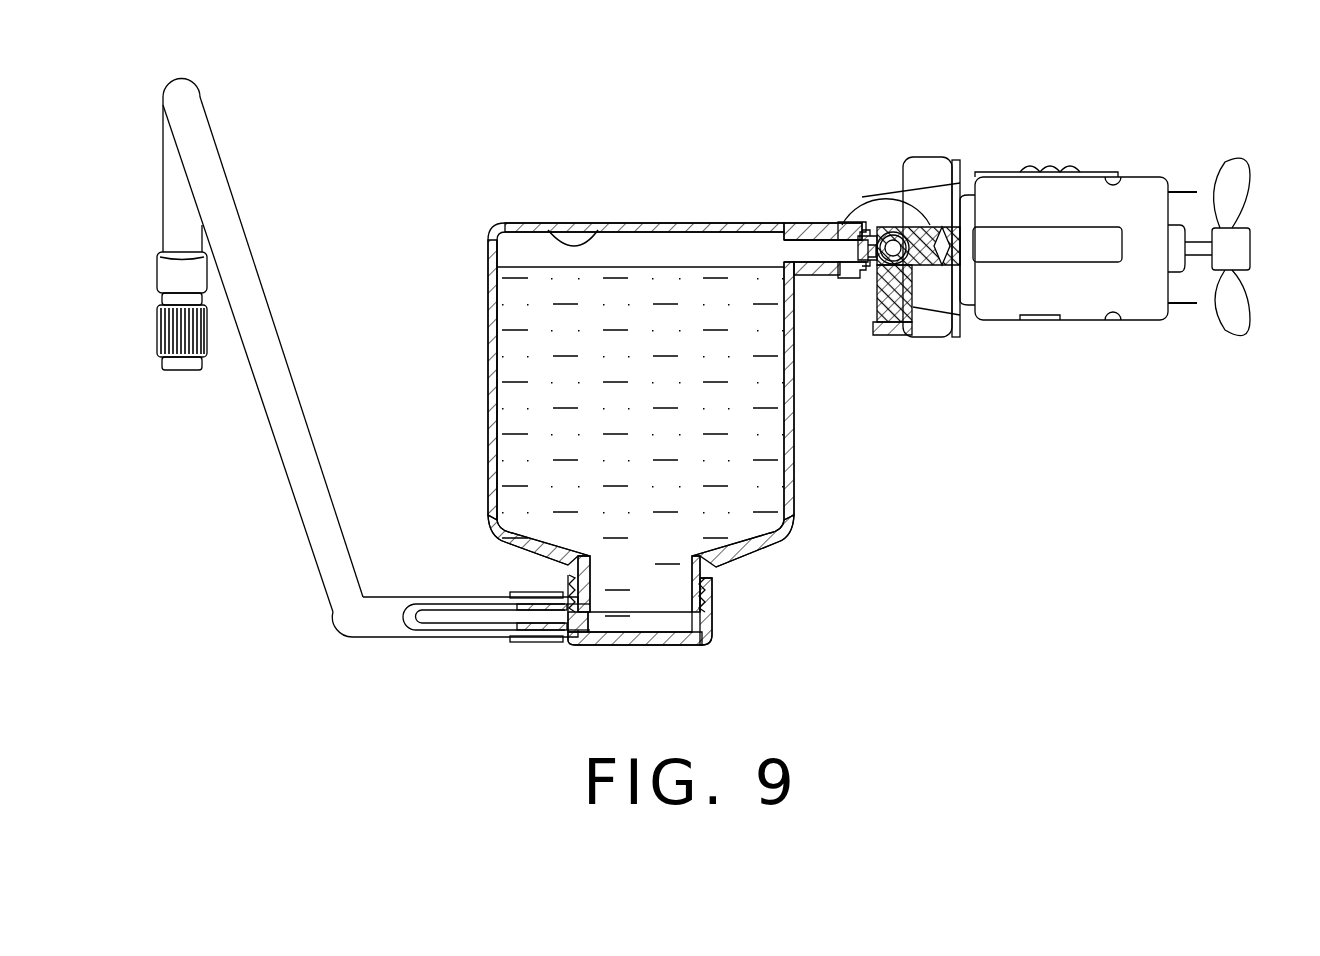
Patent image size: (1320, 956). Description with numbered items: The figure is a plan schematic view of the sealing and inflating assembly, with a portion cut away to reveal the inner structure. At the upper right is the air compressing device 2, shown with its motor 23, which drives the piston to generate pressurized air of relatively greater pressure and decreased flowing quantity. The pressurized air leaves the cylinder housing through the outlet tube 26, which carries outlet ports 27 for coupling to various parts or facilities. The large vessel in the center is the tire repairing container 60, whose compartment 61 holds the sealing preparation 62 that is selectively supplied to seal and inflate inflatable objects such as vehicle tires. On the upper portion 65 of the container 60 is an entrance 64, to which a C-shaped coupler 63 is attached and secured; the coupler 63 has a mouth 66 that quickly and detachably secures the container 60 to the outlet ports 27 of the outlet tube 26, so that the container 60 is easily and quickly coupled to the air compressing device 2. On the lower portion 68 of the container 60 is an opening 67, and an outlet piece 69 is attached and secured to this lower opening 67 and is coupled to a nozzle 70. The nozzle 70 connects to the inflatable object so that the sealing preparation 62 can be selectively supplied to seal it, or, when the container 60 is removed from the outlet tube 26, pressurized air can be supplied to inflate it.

The air compressing device 2 is at (992, 108).
The motor 23 is at (1068, 300).
The outlet tube 26 is at (895, 235).
The outlet ports 27 is at (866, 240).
The tire repairing container 60 is at (488, 258).
The compartment 61 is at (576, 225).
The sealing preparation 62 is at (522, 333).
The C-shaped coupler 63 is at (808, 228).
The entrance 64 is at (782, 243).
The upper portion 65 is at (675, 228).
The mouth 66 is at (850, 276).
The opening 67 is at (693, 585).
The lower portion 68 is at (792, 541).
The outlet piece 69 is at (575, 640).
The nozzle 70 is at (190, 372).